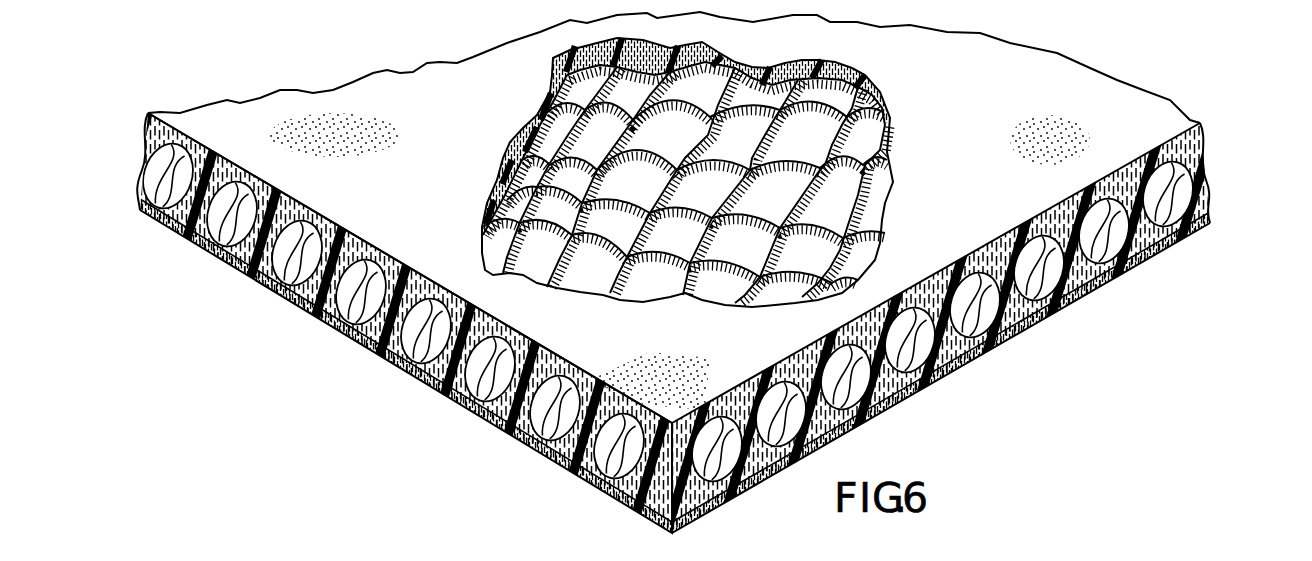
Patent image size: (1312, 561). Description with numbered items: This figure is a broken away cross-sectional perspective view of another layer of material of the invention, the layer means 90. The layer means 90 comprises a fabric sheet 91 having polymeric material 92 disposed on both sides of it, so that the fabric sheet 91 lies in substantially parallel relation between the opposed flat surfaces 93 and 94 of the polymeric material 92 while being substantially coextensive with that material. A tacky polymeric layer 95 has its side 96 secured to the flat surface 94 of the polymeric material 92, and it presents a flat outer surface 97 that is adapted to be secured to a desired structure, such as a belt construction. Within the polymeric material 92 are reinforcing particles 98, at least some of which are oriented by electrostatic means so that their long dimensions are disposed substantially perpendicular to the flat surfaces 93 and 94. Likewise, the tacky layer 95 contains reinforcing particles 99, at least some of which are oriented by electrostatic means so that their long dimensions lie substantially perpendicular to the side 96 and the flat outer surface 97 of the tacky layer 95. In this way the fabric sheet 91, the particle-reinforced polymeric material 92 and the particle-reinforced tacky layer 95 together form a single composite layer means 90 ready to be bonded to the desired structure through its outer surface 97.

The layer means 90 is at (1181, 70).
The fabric sheet 91 is at (1200, 190).
The polymeric material 92 is at (1186, 125).
The flat surface 93 is at (1083, 80).
The flat surface 94 is at (1173, 243).
The tacky polymeric layer 95 is at (1050, 318).
The side 96 is at (987, 340).
The flat outer surface 97 is at (958, 372).
The reinforcing particles 98 is at (681, 424).
The reinforcing particles 99 is at (727, 500).